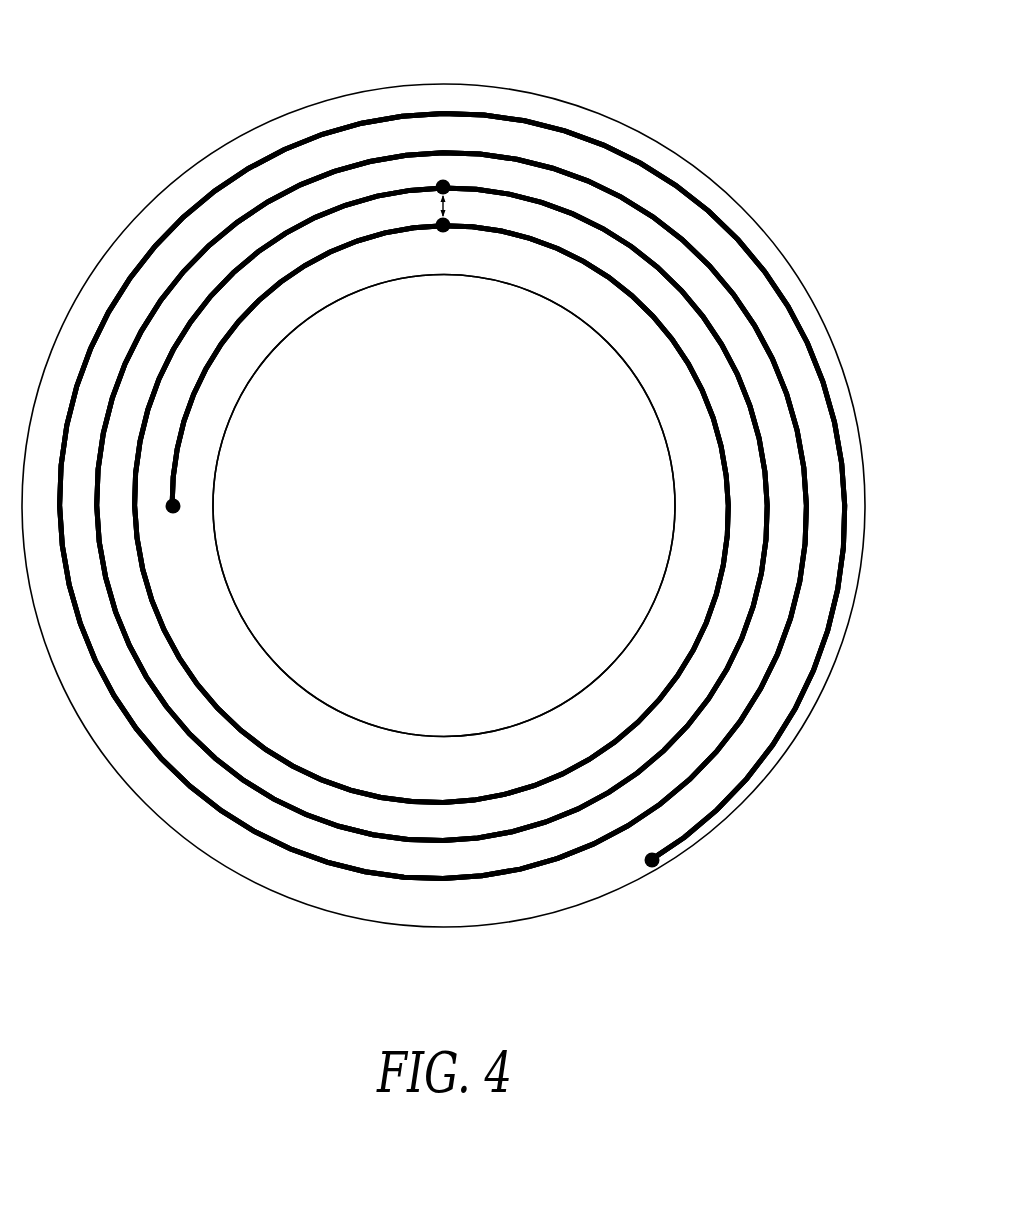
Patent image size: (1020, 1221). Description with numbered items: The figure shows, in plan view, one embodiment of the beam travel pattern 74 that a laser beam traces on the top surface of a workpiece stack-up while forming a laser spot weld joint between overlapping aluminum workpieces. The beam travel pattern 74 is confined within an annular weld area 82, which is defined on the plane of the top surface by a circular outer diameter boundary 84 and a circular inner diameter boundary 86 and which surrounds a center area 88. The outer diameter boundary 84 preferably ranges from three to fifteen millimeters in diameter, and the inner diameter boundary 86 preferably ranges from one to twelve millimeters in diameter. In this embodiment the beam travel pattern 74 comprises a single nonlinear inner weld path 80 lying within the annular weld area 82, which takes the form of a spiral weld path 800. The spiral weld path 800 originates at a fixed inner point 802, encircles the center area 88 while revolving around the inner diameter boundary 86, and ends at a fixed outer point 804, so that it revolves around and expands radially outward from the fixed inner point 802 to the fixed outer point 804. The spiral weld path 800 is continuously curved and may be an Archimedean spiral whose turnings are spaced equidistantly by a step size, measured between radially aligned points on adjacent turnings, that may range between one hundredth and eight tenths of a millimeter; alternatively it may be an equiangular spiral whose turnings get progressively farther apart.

The beam travel pattern 74 is at (463, 499).
The nonlinear inner weld path 80 is at (415, 100).
The spiral weld path 800 is at (573, 130).
The annular weld area 82 is at (603, 208).
The outer diameter boundary 84 is at (260, 122).
The inner diameter boundary 86 is at (677, 497).
The center area 88 is at (448, 522).
The fixed inner point 802 is at (181, 507).
The fixed outer point 804 is at (645, 866).